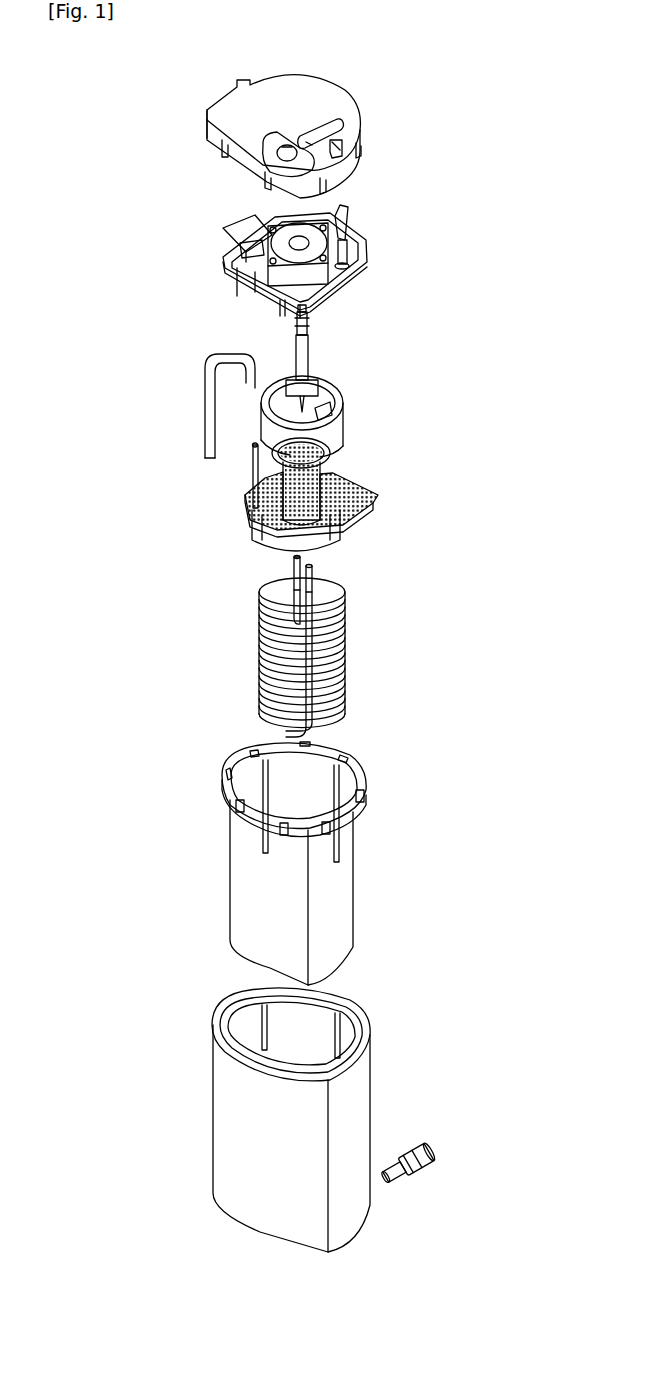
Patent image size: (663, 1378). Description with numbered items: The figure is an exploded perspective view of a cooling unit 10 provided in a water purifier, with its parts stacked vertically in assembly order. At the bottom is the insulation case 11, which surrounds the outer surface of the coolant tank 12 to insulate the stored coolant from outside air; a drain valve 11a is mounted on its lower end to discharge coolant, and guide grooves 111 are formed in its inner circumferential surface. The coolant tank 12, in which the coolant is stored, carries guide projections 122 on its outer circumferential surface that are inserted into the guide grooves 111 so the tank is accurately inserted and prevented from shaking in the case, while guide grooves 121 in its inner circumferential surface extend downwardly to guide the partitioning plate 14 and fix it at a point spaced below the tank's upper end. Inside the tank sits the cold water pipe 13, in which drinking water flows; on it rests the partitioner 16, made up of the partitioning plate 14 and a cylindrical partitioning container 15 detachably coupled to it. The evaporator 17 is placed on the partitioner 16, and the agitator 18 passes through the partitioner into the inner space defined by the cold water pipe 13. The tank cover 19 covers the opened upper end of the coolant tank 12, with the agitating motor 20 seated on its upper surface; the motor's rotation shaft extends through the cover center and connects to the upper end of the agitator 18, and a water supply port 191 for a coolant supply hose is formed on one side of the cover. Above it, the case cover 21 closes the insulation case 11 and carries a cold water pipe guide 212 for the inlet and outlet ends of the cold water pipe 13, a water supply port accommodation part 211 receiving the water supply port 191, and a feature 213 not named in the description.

The cooling unit 10 is at (134, 297).
The insulation case 11 is at (352, 1120).
The drain valve 11a is at (432, 1162).
The guide grooves 111 is at (352, 1038).
The coolant tank 12 is at (323, 863).
The guide grooves 121 is at (349, 788).
The guide projections 122 is at (341, 838).
The cold water pipe 13 is at (348, 676).
The partitioning plate 14 is at (372, 486).
The partitioning container 15 is at (331, 456).
The partitioner 16 is at (355, 494).
The evaporator 17 is at (342, 396).
The agitator 18 is at (306, 356).
The tank cover 19 is at (326, 249).
The water supply port 191 is at (349, 248).
The agitating motor 20 is at (298, 240).
The case cover 21 is at (278, 116).
The water supply port accommodation part 211 is at (334, 122).
The cold water pipe guide 212 is at (292, 148).
The tab of cap 213 is at (210, 146).